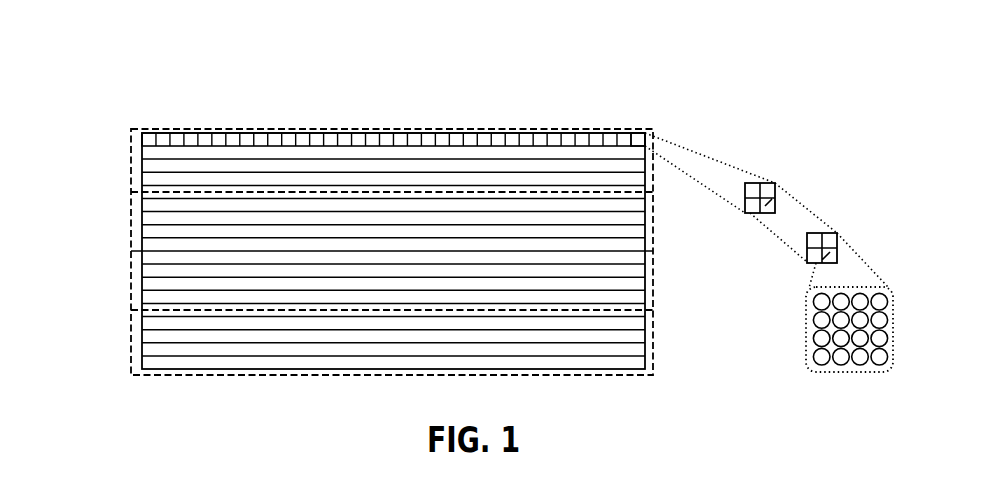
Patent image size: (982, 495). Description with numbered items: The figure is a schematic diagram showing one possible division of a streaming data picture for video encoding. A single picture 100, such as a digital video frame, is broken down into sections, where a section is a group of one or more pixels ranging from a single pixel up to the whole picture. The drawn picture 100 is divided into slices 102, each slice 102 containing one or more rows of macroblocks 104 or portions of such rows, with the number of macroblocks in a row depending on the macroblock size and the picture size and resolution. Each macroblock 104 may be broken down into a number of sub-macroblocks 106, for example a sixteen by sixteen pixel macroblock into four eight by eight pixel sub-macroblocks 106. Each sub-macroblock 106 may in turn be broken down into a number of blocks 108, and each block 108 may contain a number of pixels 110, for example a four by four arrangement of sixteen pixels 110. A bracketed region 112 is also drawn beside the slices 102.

The picture 100 is at (150, 70).
The slice 102 is at (130, 140).
The macroblock 104 is at (742, 148).
The sub-macroblock 106 is at (851, 200).
The block 108 is at (818, 263).
The pixel 110 is at (857, 360).
The row group 112 is at (113, 128).